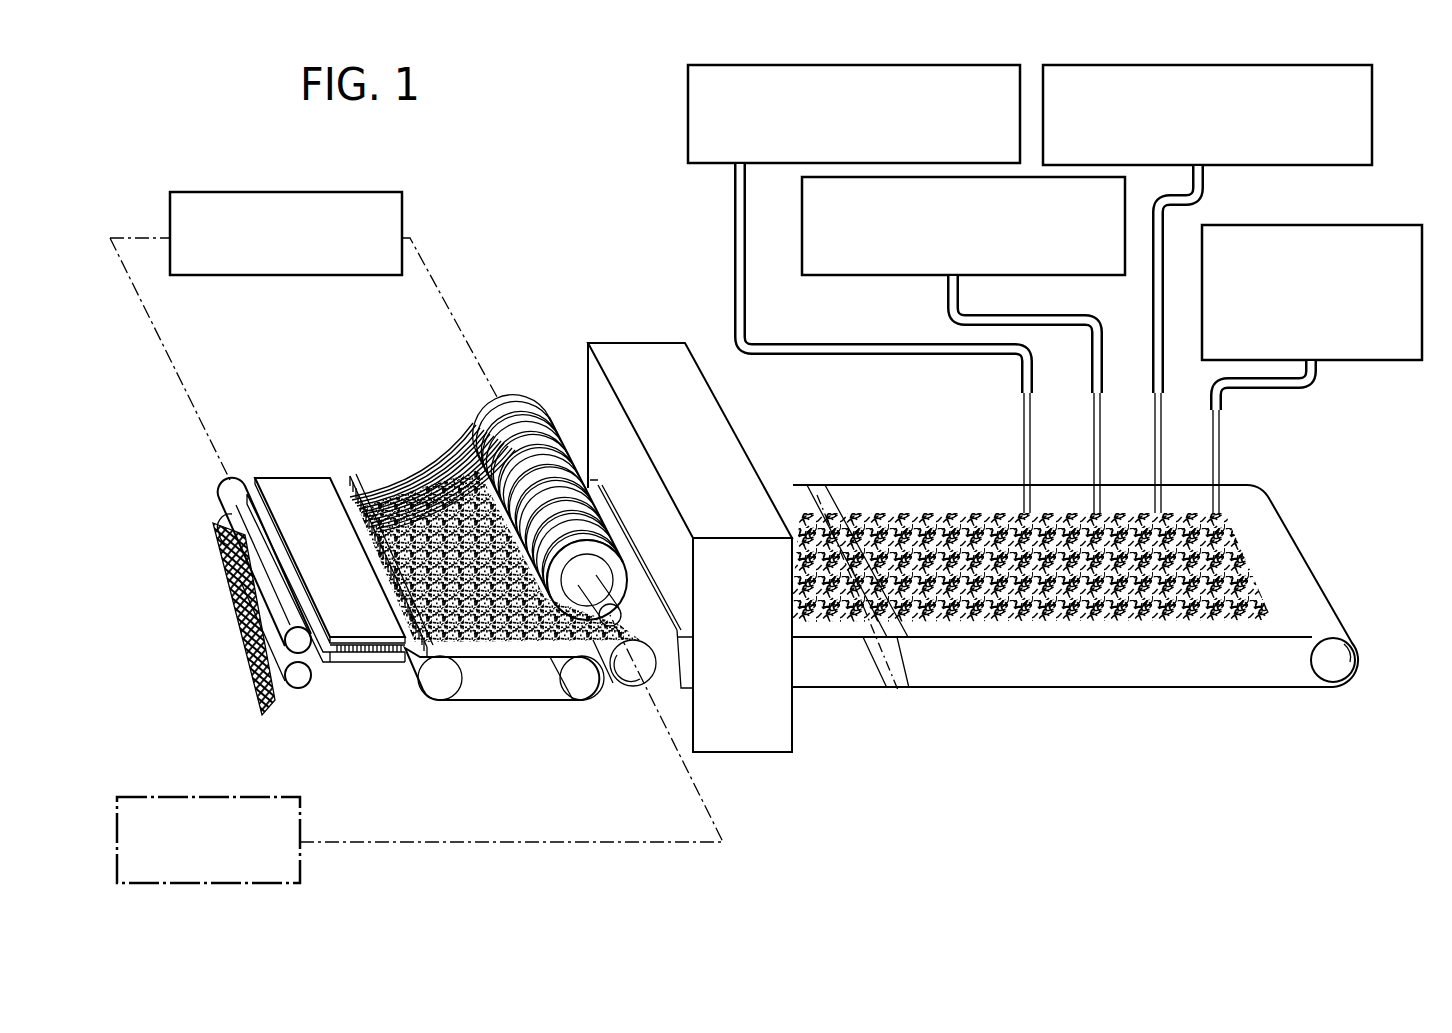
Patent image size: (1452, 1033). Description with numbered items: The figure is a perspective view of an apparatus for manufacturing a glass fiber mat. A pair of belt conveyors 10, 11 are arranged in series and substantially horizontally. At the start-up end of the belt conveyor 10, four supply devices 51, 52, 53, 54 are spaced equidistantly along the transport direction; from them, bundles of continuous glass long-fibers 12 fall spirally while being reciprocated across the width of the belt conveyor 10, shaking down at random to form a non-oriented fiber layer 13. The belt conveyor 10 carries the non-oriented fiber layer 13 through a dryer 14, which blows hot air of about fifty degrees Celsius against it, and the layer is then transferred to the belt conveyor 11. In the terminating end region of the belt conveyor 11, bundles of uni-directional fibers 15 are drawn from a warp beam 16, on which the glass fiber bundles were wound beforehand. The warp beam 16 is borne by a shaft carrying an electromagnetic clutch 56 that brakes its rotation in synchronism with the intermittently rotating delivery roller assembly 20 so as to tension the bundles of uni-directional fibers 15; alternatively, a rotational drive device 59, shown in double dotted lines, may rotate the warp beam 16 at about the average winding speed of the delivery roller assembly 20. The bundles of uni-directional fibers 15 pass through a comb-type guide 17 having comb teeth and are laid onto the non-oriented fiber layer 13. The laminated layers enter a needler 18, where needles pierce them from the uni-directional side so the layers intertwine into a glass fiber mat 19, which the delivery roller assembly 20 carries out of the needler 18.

The belt conveyor 10 is at (1273, 540).
The belt conveyor 11 is at (535, 703).
The bundles of continuous glass long-fibers 12 is at (837, 357).
The non-oriented fiber layer 13 is at (940, 510).
The dryer 14 is at (732, 428).
The bundles of uni-directional fibers 15 is at (440, 457).
The warp beam 16 is at (515, 395).
The comb-type guide 17 is at (352, 477).
The needler 18 is at (302, 480).
The glass fiber mat 19 is at (250, 692).
The delivery roller assembly 20 is at (228, 480).
The supply device 51 is at (688, 112).
The supply device 52 is at (878, 278).
The supply device 53 is at (1323, 167).
The supply device 54 is at (1353, 362).
The electromagnetic clutch 56 is at (200, 192).
The rotational drive device 59 is at (277, 795).